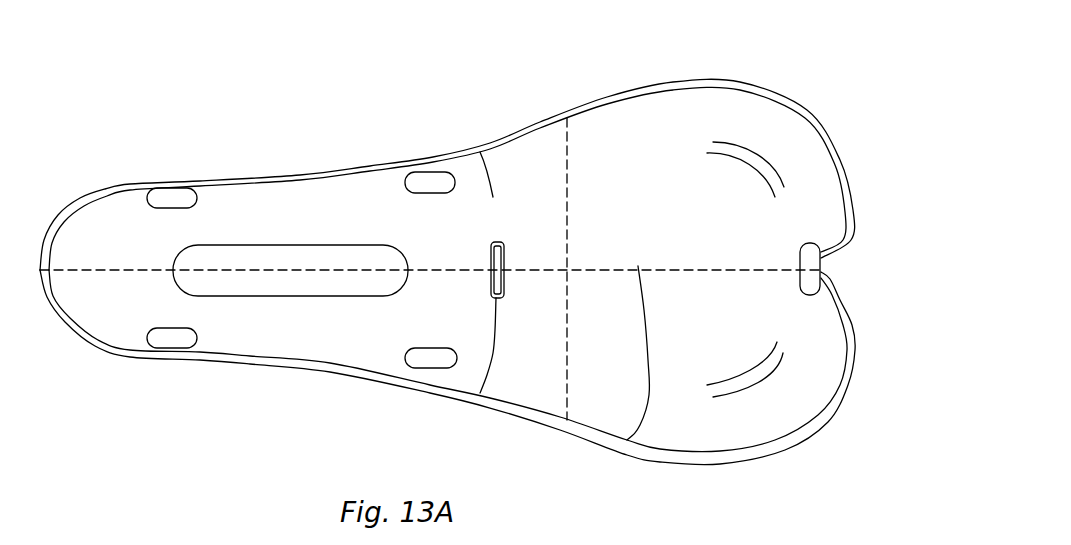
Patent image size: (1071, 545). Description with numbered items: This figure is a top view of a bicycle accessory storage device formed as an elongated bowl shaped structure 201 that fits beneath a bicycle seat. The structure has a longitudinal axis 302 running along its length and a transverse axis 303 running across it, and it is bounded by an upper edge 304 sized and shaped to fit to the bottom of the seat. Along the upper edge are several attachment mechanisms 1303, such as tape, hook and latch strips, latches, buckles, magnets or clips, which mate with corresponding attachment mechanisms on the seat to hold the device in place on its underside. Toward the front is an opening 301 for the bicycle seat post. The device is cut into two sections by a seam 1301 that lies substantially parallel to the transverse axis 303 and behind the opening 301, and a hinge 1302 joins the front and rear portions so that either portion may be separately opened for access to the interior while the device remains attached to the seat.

The opening 301 is at (258, 257).
The longitudinal axis 302 is at (627, 440).
The transverse axis 303 is at (566, 153).
The upper edge 304 is at (667, 88).
The seam 1301 is at (495, 242).
The hinge 1302 is at (490, 265).
The attachment mechanisms 1303 is at (177, 188).
The elongated bowl shaped structure 201 is at (758, 540).